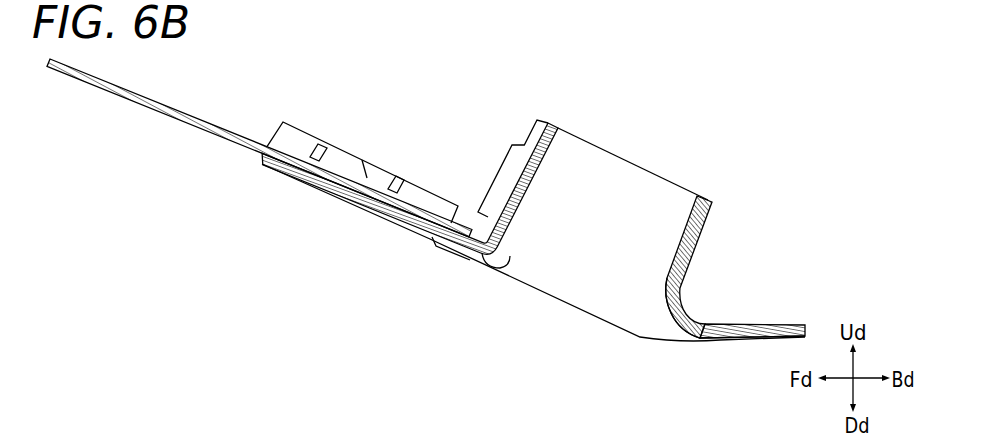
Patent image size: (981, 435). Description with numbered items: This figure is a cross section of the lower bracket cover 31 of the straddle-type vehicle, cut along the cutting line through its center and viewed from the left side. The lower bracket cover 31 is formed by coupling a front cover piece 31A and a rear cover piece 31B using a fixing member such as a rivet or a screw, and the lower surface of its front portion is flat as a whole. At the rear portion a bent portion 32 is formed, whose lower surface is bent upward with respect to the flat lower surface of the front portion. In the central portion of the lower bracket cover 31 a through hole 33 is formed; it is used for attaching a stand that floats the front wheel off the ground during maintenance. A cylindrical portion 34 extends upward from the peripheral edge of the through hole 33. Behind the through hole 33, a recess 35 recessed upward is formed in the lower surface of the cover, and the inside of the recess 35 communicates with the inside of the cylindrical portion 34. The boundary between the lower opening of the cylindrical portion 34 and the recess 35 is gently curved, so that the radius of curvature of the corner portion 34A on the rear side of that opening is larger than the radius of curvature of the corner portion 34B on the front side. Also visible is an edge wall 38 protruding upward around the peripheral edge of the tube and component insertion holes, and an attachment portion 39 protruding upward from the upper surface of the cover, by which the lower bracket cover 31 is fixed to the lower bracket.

The lower bracket cover 31 is at (428, 93).
The front cover piece 31A is at (158, 113).
The rear cover piece 31B is at (440, 245).
The bent portion 32 is at (745, 323).
The through hole 33 is at (508, 259).
The cylindrical portion 34 is at (697, 231).
The corner portion on rear side 34A is at (667, 308).
The corner portion on front side 34B is at (477, 253).
The recess 35 is at (698, 339).
The edge wall 38 is at (271, 134).
The attachment portion 39 is at (528, 133).